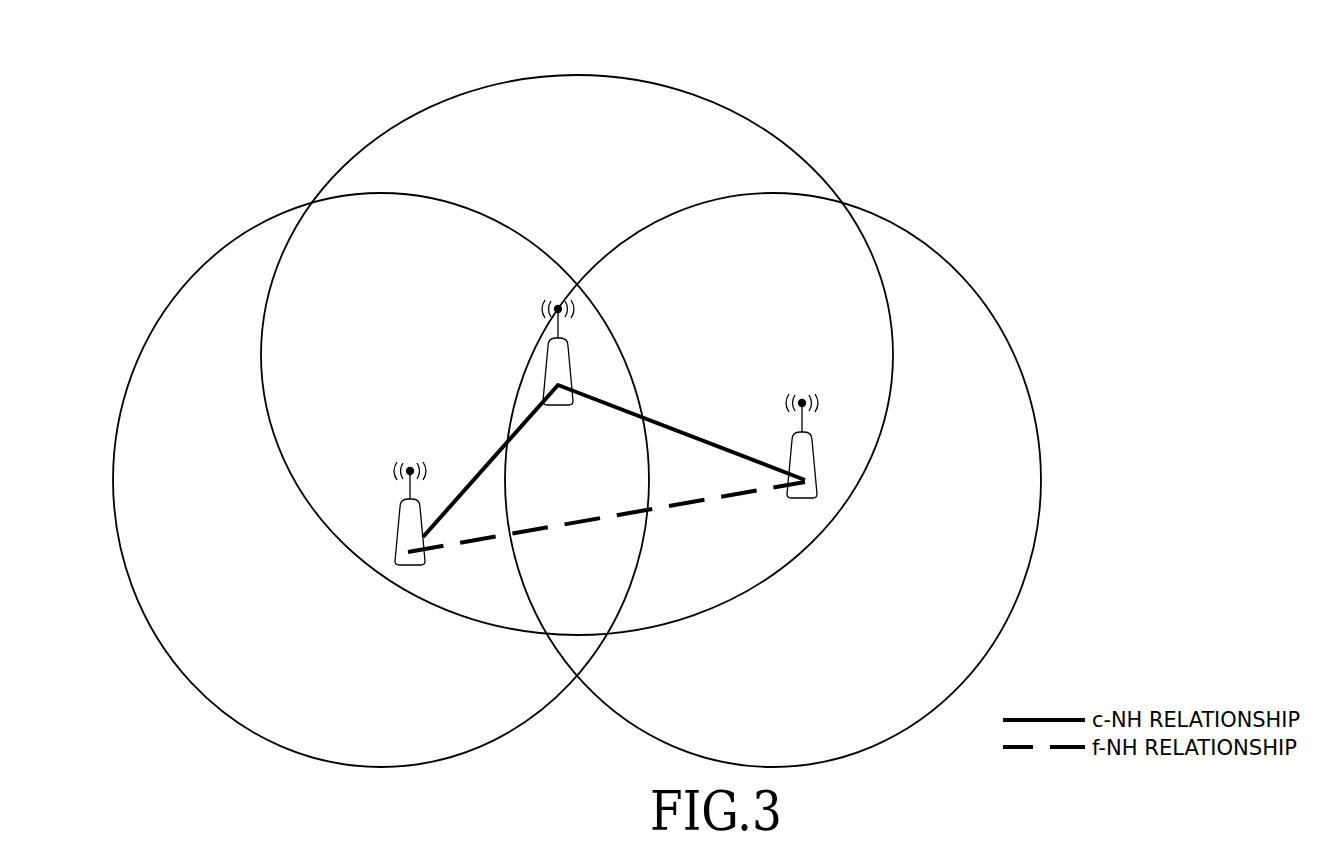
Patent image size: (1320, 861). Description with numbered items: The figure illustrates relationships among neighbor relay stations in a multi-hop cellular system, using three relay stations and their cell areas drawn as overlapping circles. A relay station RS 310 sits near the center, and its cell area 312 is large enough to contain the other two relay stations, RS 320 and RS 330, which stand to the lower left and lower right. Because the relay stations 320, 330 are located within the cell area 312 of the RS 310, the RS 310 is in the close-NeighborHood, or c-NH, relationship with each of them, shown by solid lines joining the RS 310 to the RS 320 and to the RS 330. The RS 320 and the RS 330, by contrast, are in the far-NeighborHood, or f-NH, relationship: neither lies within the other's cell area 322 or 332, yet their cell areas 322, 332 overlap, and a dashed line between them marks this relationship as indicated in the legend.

The relay station 310 is at (572, 368).
The relay station 320 is at (446, 529).
The relay station 330 is at (778, 462).
The cell area 312 is at (575, 75).
The cell area 322 is at (207, 261).
The cell area 332 is at (933, 252).